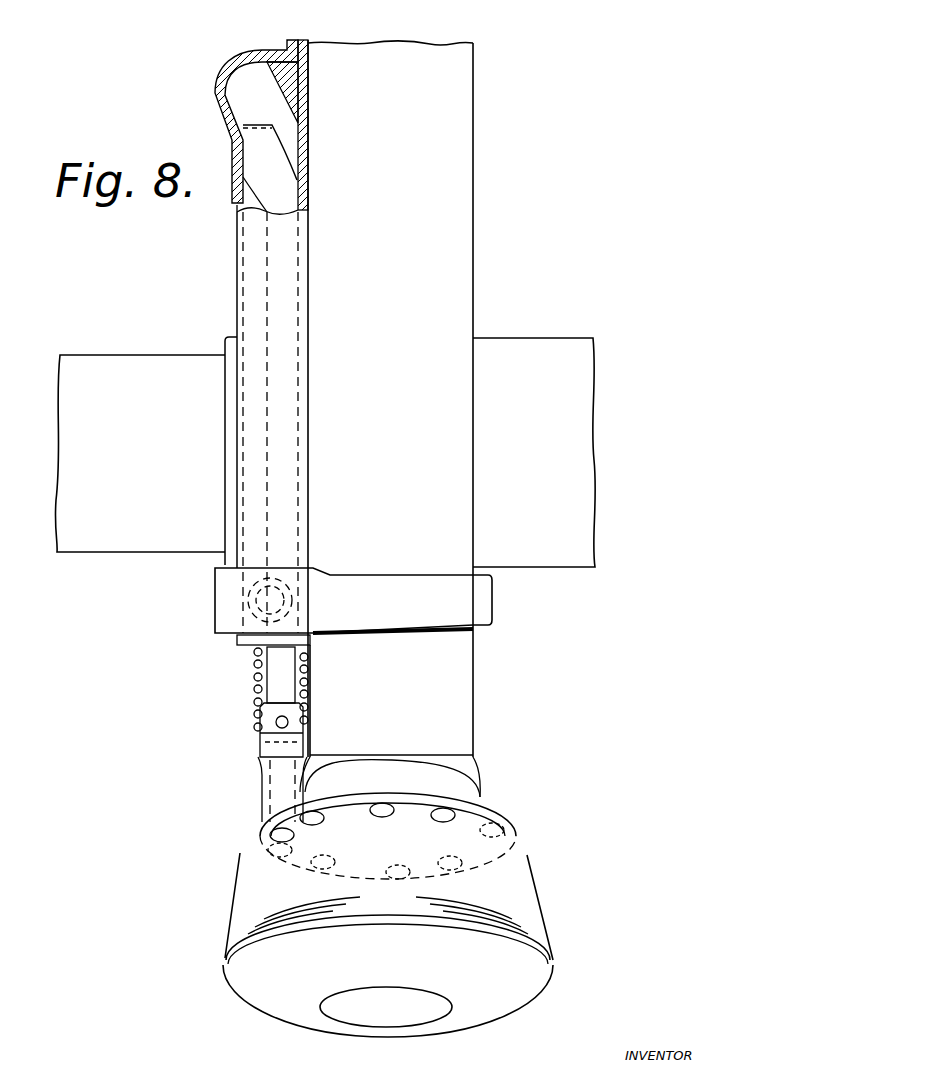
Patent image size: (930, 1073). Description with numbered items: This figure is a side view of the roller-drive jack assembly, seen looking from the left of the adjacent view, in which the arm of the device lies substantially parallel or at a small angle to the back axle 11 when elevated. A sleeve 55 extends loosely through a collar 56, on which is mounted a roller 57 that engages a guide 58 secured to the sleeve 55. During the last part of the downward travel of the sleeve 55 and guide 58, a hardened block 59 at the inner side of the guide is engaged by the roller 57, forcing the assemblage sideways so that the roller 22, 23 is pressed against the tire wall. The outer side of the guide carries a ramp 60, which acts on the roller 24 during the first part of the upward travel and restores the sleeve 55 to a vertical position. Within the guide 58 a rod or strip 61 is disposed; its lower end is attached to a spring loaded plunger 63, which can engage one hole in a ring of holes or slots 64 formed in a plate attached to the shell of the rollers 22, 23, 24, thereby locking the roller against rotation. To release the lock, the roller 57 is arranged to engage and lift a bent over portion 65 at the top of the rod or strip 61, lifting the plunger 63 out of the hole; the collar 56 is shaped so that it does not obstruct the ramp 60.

The back axle 11 is at (123, 540).
The roller 22 is at (543, 885).
The roller 23 is at (258, 1000).
The roller 24 is at (448, 982).
The sleeve 55 is at (475, 190).
The collar 56 is at (492, 612).
The roller 57 is at (292, 590).
The guide 58 is at (237, 275).
The hardened block 59 is at (288, 90).
The ramp 60 is at (222, 95).
The rod or strip 61 is at (290, 185).
The spring loaded plunger 63 is at (262, 745).
The ring of holes or slots 64 is at (290, 835).
The bent over portion 65 is at (218, 128).